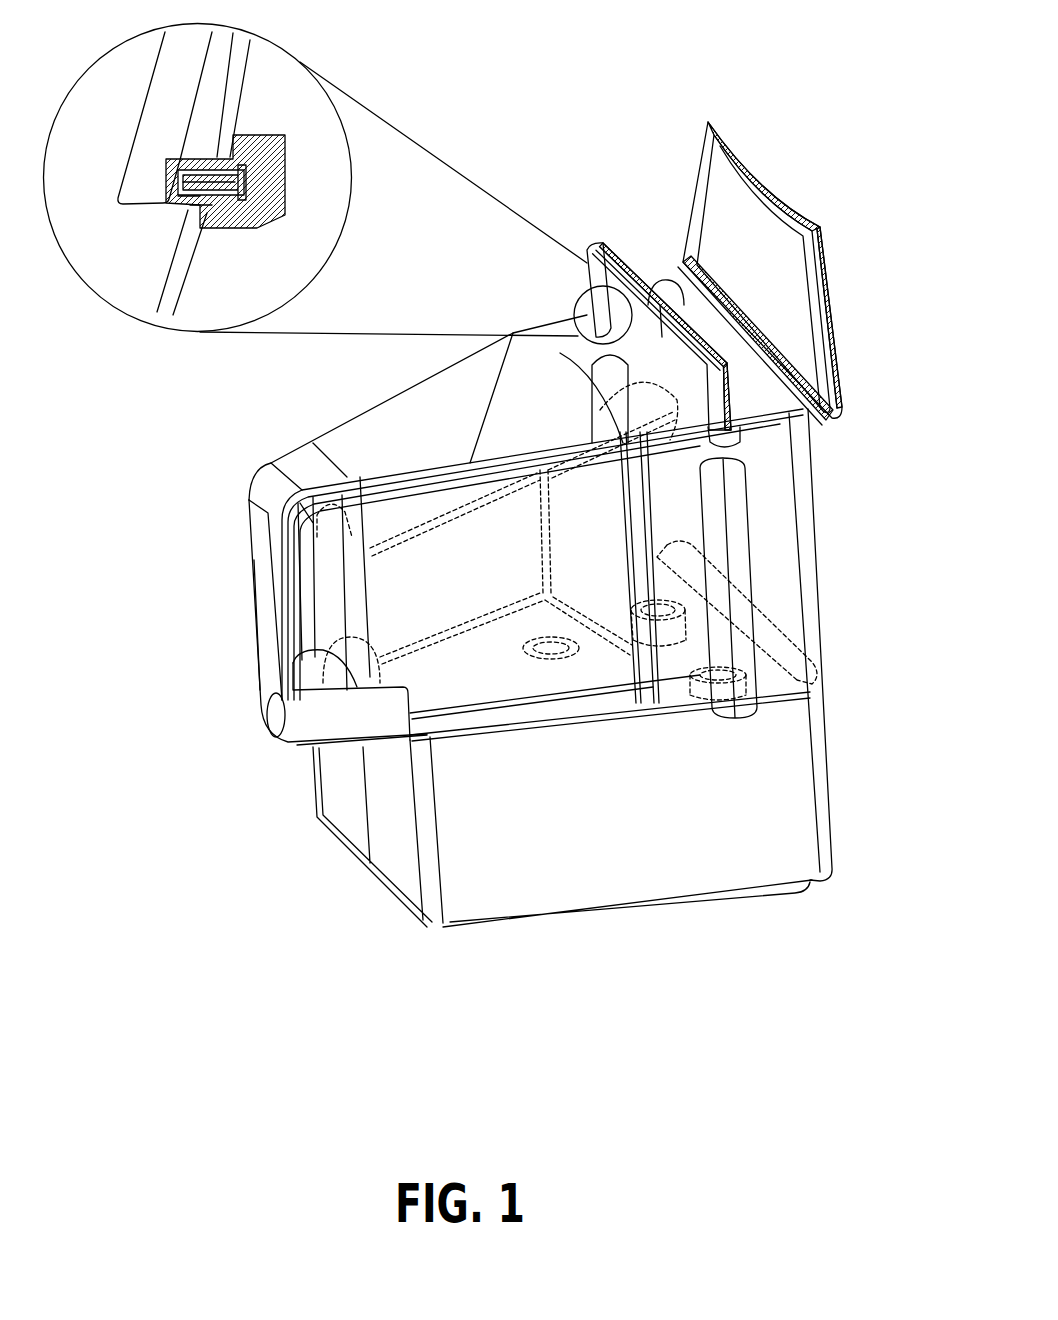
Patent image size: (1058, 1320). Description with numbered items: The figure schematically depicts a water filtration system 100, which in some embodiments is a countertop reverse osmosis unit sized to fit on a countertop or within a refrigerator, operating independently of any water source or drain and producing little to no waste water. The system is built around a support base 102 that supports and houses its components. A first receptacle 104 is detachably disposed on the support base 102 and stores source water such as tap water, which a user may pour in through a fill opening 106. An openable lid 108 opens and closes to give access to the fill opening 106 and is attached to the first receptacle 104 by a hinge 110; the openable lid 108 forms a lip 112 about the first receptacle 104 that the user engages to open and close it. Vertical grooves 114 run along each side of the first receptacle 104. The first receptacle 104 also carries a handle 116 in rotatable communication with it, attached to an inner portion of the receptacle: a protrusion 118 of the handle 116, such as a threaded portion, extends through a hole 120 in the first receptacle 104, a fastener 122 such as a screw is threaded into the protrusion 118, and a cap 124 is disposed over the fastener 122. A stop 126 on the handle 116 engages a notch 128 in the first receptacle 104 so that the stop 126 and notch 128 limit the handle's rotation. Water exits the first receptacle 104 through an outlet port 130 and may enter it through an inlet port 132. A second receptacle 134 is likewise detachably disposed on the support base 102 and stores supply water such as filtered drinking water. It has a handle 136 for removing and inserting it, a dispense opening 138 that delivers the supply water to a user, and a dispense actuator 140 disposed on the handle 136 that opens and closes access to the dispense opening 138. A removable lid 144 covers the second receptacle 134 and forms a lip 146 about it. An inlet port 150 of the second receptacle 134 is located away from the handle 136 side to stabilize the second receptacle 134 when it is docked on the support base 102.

The water filtration system 100 is at (827, 130).
The support base 102 is at (550, 495).
The first receptacle 104 is at (227, 100).
The fill opening 106 is at (634, 285).
The openable lid 108 is at (828, 263).
The hinge 110 is at (810, 300).
The lip 112 is at (825, 343).
The vertical grooves 114 is at (740, 536).
The handle 116 is at (167, 97).
The protrusion 118 is at (187, 200).
The hole 120 is at (192, 202).
The fastener 122 is at (240, 187).
The cap 124 is at (273, 163).
The stop 126 is at (657, 281).
The notch 128 is at (817, 368).
The outlet port 130 is at (660, 617).
The inlet port 132 is at (747, 680).
The second receptacle 134 is at (517, 673).
The handle 136 is at (264, 552).
The dispense opening 138 is at (300, 765).
The dispense actuator 140 is at (278, 718).
The lid 144 is at (377, 423).
The lip 146 is at (470, 463).
The inlet port 150 is at (567, 660).